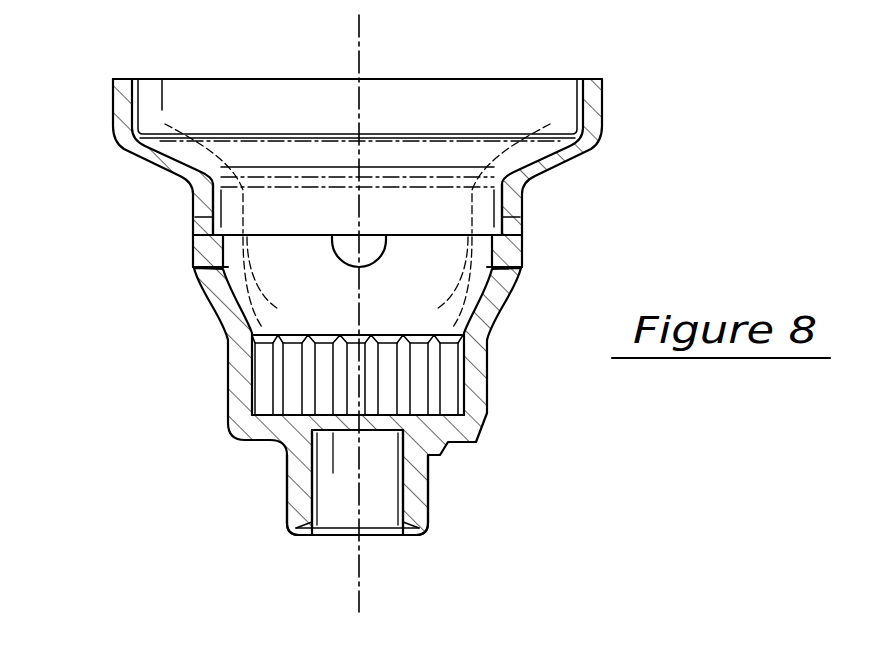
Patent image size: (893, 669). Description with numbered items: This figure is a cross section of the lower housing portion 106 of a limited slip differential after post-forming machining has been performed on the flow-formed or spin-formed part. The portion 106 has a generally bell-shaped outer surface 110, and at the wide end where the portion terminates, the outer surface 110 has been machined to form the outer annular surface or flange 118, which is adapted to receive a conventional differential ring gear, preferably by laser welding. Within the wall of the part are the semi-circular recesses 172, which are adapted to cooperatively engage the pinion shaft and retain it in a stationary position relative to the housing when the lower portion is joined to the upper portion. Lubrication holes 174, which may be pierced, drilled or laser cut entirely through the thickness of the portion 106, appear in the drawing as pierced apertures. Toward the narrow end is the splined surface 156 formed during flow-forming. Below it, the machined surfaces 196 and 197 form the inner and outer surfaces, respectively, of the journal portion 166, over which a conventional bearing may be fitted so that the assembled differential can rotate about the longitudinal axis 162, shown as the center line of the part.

The lower portion 106 is at (212, 434).
The outer surface 110 is at (214, 312).
The outer annular surface or flange 118 is at (603, 105).
The splined surface 156 is at (437, 380).
The axis 162 is at (363, 48).
The journal portion 166 is at (428, 510).
The semi-circular recess 172 is at (333, 250).
The lubrication holes 174 is at (200, 230).
The surface 196 is at (313, 505).
The surface 197 is at (287, 487).